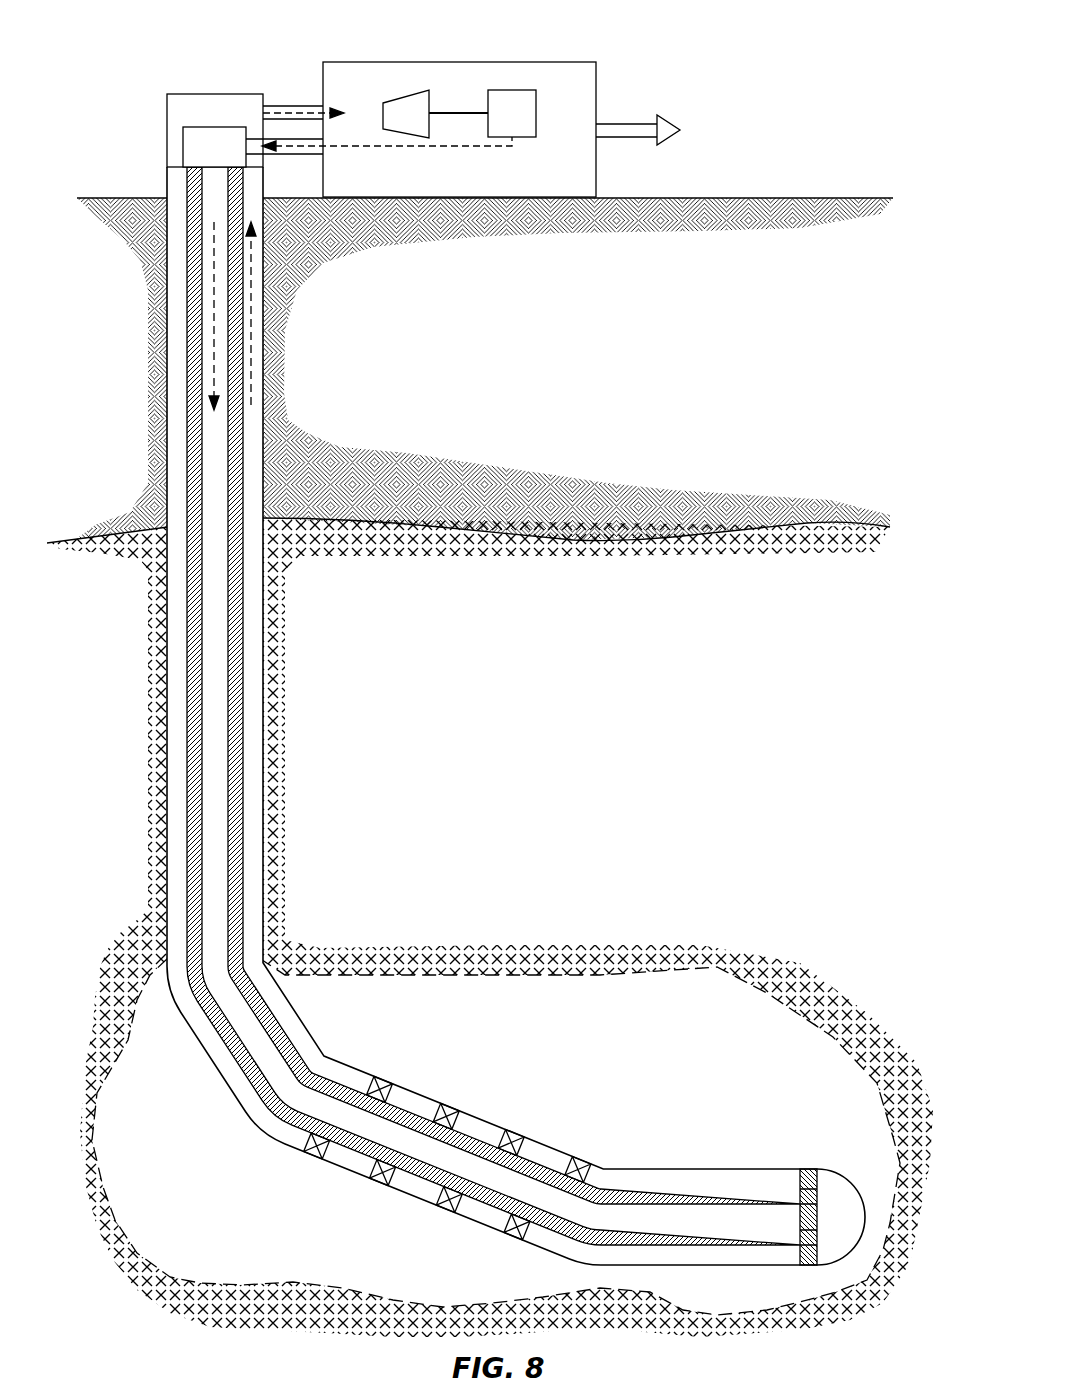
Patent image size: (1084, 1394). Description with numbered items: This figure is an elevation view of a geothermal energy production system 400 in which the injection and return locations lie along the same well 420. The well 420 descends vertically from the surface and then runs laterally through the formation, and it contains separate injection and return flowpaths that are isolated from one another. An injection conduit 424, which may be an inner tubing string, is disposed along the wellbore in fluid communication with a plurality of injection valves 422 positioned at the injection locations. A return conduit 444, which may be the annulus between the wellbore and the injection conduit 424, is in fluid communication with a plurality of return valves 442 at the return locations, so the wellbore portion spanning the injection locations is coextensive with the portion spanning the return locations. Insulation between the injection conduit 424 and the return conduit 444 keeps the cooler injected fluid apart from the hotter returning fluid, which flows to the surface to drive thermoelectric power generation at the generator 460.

The well system 400 is at (490, 670).
The well 420 is at (171, 409).
The injection valves 422 is at (306, 1143).
The injection conduit 424 is at (226, 585).
The return valves 442 is at (381, 1086).
The return conduit 444 is at (255, 695).
The generator 460 is at (552, 62).